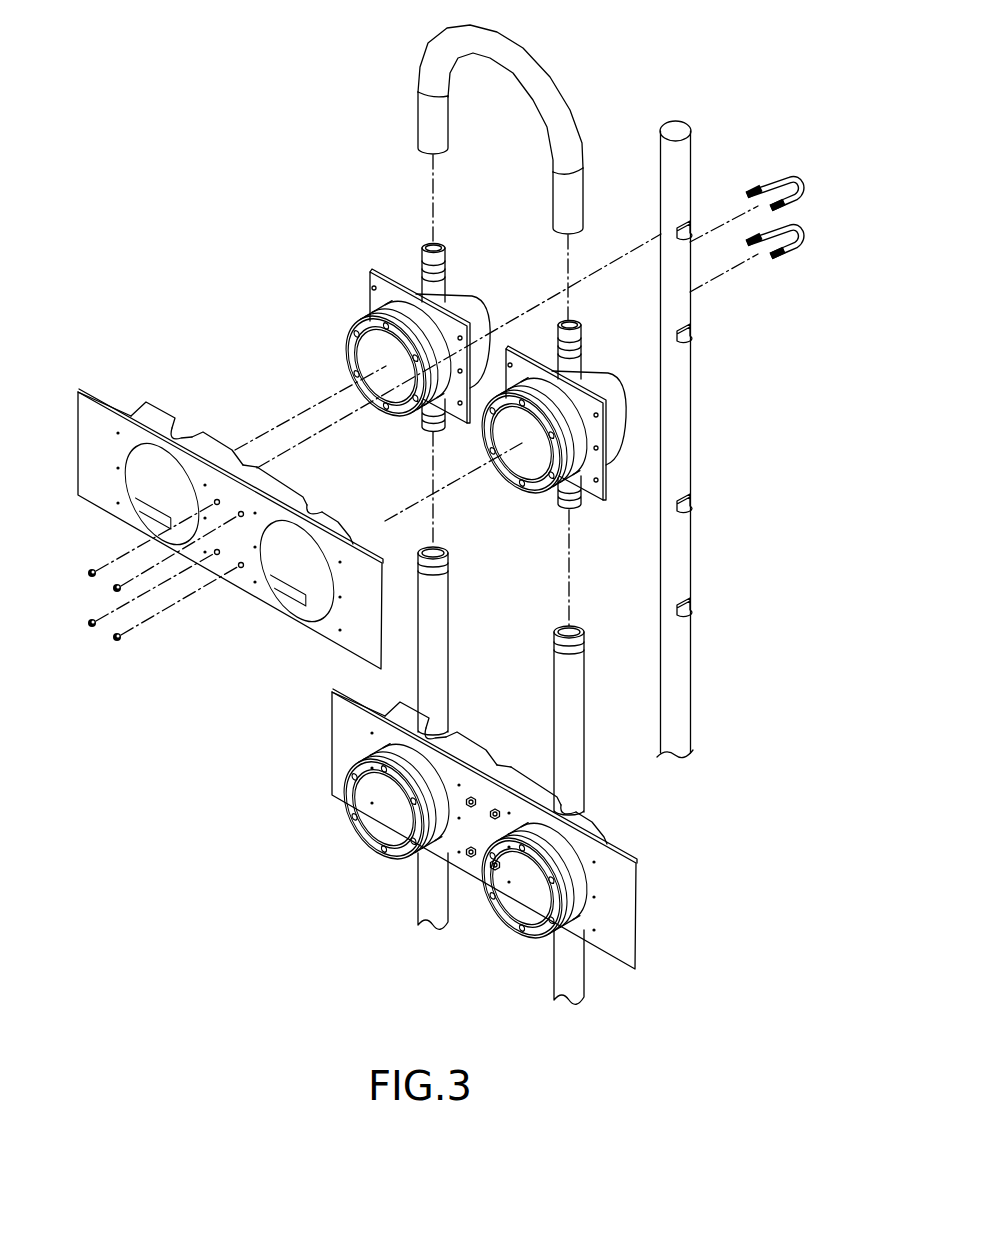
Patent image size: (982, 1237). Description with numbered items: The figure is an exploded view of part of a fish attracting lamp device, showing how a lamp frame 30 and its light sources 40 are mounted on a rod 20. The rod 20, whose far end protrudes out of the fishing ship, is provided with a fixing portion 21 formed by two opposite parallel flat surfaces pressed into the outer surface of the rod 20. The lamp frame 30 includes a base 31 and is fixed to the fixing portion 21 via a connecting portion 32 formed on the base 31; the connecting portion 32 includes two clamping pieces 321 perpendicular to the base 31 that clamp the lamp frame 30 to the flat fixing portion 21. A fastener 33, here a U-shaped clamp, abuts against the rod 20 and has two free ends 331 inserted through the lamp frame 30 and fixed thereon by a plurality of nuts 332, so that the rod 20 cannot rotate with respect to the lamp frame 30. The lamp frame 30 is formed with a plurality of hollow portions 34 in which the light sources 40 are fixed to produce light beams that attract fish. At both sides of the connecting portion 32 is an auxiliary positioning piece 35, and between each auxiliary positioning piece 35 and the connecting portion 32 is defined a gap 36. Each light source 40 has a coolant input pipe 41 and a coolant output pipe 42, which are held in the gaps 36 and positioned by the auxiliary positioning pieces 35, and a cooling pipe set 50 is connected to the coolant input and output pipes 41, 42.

The rod 20 is at (693, 407).
The fixing portion 21 is at (691, 498).
The lamp frame 30 is at (355, 646).
The base 31 is at (97, 412).
The connecting portion 32 is at (203, 364).
The clamping pieces 321 is at (236, 452).
The fastener 33 is at (795, 185).
The free ends 331 is at (750, 190).
The nuts 332 is at (113, 646).
The hollow portions 34 is at (290, 566).
The auxiliary positioning piece 35 is at (138, 414).
The gap 36 is at (192, 436).
The light sources 40 is at (368, 288).
The coolant input pipe 41 is at (582, 338).
The coolant output pipe 42 is at (428, 252).
The cooling pipe set 50 is at (537, 72).